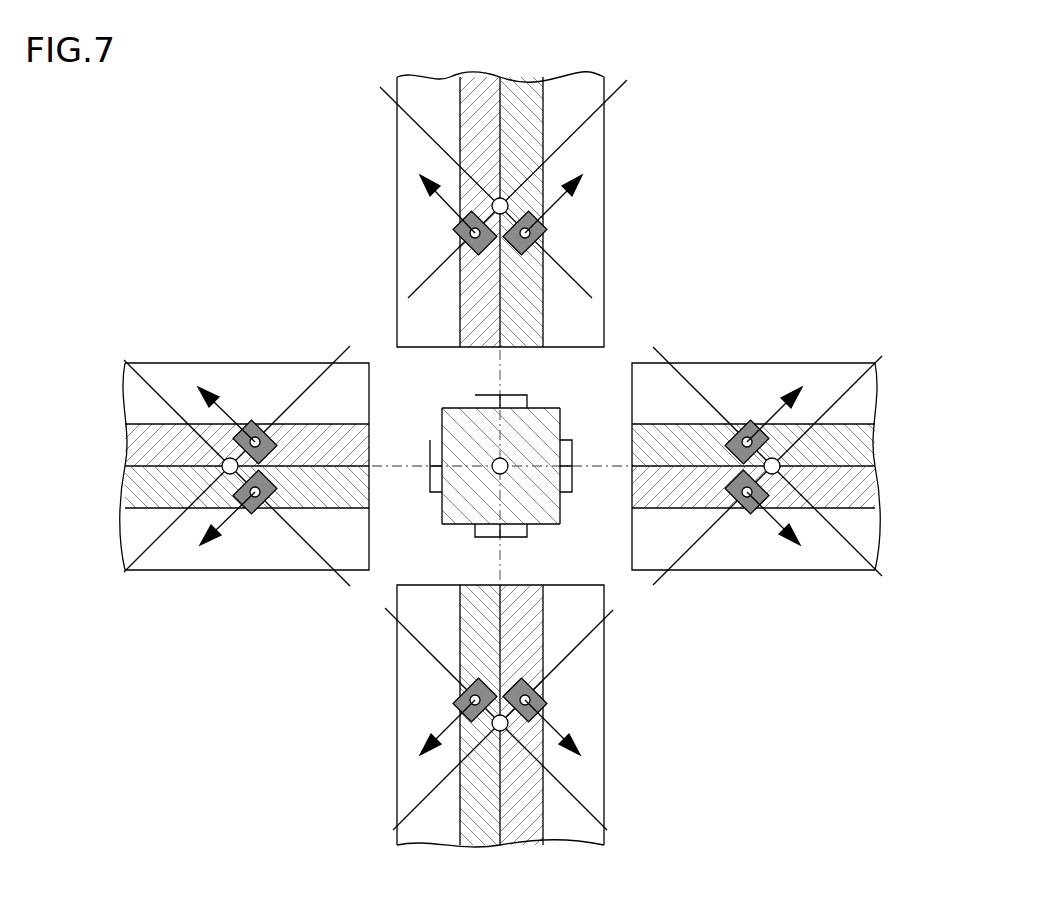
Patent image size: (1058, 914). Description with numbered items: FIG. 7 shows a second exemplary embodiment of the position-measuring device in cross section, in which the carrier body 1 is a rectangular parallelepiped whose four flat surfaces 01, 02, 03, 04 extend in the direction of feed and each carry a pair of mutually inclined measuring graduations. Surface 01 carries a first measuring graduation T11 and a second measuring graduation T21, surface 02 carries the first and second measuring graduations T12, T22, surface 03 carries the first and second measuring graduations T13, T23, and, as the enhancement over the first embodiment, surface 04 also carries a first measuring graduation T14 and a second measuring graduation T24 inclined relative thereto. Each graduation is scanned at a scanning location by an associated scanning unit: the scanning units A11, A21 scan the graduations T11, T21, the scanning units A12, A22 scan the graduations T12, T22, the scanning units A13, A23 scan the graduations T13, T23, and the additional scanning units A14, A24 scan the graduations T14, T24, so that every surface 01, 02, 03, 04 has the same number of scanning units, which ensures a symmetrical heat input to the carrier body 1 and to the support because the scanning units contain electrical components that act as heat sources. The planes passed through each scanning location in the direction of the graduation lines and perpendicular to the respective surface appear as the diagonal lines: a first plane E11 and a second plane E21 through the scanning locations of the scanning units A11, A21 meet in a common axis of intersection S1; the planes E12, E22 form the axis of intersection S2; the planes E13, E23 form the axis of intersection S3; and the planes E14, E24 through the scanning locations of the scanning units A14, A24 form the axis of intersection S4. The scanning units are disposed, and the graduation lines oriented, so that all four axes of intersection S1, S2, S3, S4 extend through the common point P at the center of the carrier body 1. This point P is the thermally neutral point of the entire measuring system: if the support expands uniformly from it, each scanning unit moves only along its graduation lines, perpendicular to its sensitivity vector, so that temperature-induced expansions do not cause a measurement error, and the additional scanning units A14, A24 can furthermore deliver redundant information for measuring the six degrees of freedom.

The carrier body 1 is at (452, 420).
The surface 01 is at (538, 405).
The surface 02 is at (562, 505).
The surface 03 is at (440, 505).
The surface 04 is at (463, 527).
The point P is at (503, 463).
The first measuring graduation T11 is at (480, 100).
The second measuring graduation T21 is at (530, 100).
The first measuring graduation T12 is at (654, 440).
The second measuring graduation T22 is at (656, 500).
The first measuring graduation T13 is at (137, 442).
The second measuring graduation T23 is at (133, 495).
The first measuring graduation T14 is at (527, 830).
The second measuring graduation T24 is at (475, 827).
The first plane E11 is at (628, 80).
The second plane E21 is at (378, 88).
The first plane E12 is at (872, 575).
The second plane E22 is at (860, 370).
The first plane E13 is at (135, 572).
The second plane E23 is at (143, 370).
The first plane E14 is at (583, 640).
The second plane E24 is at (590, 805).
The scanning unit A11 is at (458, 226).
The scanning unit A21 is at (545, 236).
The scanning unit A12 is at (750, 420).
The scanning unit A22 is at (745, 512).
The scanning unit A13 is at (258, 420).
The scanning unit A23 is at (247, 510).
The scanning unit A14 is at (548, 705).
The scanning unit A24 is at (455, 705).
The axis of intersection S1 is at (505, 204).
The axis of intersection S2 is at (778, 472).
The axis of intersection S3 is at (222, 474).
The axis of intersection S4 is at (497, 725).